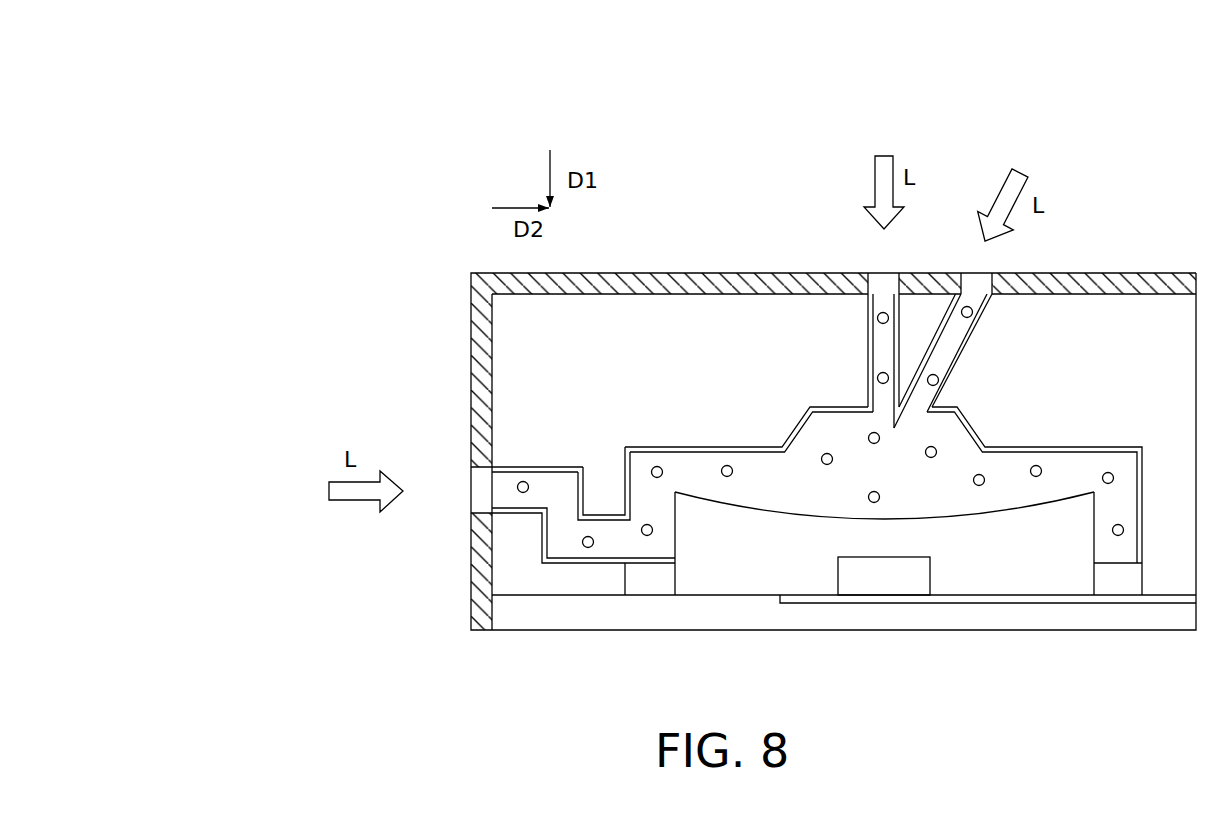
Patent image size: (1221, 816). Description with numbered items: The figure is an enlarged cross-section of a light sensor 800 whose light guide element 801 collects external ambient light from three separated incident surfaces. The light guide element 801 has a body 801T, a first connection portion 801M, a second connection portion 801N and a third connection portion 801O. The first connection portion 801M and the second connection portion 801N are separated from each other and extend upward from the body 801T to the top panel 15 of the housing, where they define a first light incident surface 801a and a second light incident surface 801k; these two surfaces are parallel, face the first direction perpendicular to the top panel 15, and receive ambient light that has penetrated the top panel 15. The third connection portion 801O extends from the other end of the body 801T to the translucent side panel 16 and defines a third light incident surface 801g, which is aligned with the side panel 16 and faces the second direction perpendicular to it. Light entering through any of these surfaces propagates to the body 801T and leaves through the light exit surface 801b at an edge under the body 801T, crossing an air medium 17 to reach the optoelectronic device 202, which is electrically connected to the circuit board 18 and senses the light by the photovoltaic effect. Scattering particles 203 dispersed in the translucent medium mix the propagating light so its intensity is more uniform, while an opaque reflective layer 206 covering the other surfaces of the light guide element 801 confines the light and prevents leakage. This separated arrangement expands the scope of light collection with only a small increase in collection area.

The light sensor 800 is at (224, 99).
The light guide element 801 is at (194, 461).
The first light incident surface 801a is at (875, 290).
The light exit surface 801b is at (797, 515).
The second light incident surface 801k is at (970, 290).
The third light incident surface 801g is at (490, 500).
The body 801T is at (740, 483).
The first connection portion 801M is at (880, 350).
The second connection portion 801N is at (955, 335).
The third connection portion 801O is at (567, 527).
The top panel 15 is at (892, 282).
The side panel 16 is at (482, 475).
The air medium 17 is at (1047, 524).
The circuit board 18 is at (1117, 598).
The optoelectronic device 202 is at (885, 572).
The scattering particles 203 is at (657, 466).
The opaque reflective layer 206 is at (547, 466).